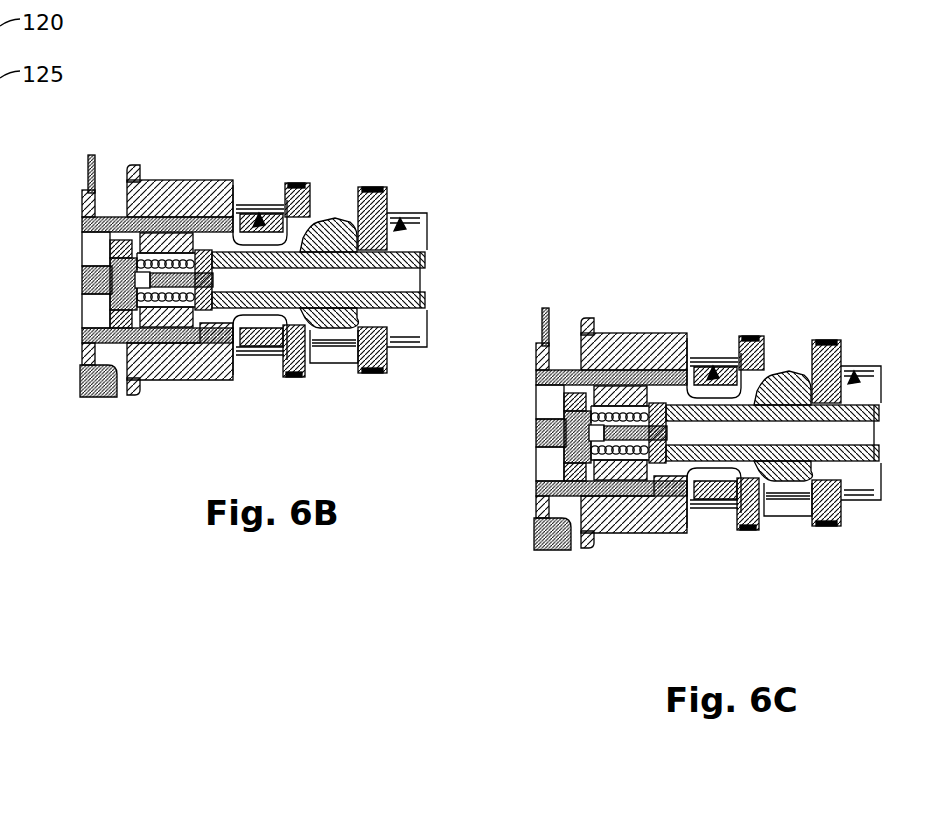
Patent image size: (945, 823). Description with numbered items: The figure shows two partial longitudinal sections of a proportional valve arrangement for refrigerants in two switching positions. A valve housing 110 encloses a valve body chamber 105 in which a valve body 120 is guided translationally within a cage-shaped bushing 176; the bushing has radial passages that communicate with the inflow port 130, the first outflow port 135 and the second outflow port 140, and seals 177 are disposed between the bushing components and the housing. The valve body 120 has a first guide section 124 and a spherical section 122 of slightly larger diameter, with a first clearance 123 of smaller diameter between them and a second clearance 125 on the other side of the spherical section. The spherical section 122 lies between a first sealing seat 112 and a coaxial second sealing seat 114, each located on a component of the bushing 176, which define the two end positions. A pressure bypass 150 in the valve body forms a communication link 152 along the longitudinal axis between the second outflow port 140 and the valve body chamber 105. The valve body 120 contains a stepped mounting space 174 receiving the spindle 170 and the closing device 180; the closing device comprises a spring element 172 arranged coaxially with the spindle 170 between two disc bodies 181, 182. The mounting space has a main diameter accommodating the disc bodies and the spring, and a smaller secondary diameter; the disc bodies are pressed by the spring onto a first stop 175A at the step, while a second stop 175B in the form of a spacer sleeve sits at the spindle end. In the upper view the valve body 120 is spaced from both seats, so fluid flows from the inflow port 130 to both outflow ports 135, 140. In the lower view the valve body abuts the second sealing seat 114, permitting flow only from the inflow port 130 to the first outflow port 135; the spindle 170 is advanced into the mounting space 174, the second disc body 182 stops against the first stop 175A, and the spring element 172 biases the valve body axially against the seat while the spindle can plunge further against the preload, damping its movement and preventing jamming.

In FIG. 6B, the valve body chamber 105 is at (103, 313).
In FIG. 6C, the valve body chamber 105 is at (556, 455).
In FIG. 6B, the valve housing 110 is at (127, 180).
In FIG. 6C, the valve housing 110 is at (576, 318).
In FIG. 6B, the first sealing seat 112 is at (276, 205).
In FIG. 6C, the first sealing seat 112 is at (757, 320).
In FIG. 6B, the second sealing seat 114 is at (353, 230).
In FIG. 6C, the second sealing seat 114 is at (836, 322).
In FIG. 6B, the valve body 120 is at (428, 262).
In FIG. 6C, the valve body 120 is at (878, 414).
In FIG. 6B, the spherical section 122 is at (331, 247).
In FIG. 6C, the spherical section 122 is at (823, 527).
In FIG. 6B, the first clearance 123 is at (248, 350).
In FIG. 6C, the first clearance 123 is at (706, 527).
In FIG. 6B, the first guide section 124 is at (222, 185).
In FIG. 6C, the first guide section 124 is at (666, 322).
In FIG. 6B, the second clearance 125 is at (397, 313).
In FIG. 6C, the second clearance 125 is at (866, 527).
In FIG. 6B, the inflow port 130 is at (330, 240).
In FIG. 6C, the inflow port 130 is at (790, 320).
In FIG. 6B, the first outflow port 135 is at (247, 213).
In FIG. 6C, the first outflow port 135 is at (708, 320).
In FIG. 6C, the second outflow port 140 is at (855, 372).
In FIG. 6B, the pressure bypass 150 is at (335, 280).
In FIG. 6C, the pressure bypass 150 is at (793, 440).
In FIG. 6B, the communication link 152 is at (336, 386).
In FIG. 6C, the communication link 152 is at (788, 542).
In FIG. 6B, the spindle 170 is at (112, 278).
In FIG. 6C, the spindle 170 is at (563, 432).
In FIG. 6B, the spring element 172 is at (157, 363).
In FIG. 6C, the spring element 172 is at (610, 527).
In FIG. 6B, the stepped mounting space 174 is at (163, 180).
In FIG. 6C, the stepped mounting space 174 is at (585, 527).
In FIG. 6B, the first stop 175A is at (197, 190).
In FIG. 6C, the first stop 175A is at (655, 527).
In FIG. 6B, the second stop 175B is at (112, 353).
In FIG. 6C, the second stop 175B is at (565, 487).
In FIG. 6B, the cage-shaped bushing 176 is at (327, 333).
In FIG. 6C, the cage-shaped bushing 176 is at (757, 527).
In FIG. 6B, the seals 177 is at (370, 373).
In FIG. 6C, the seals 177 is at (818, 322).
In FIG. 6B, the closing device 180 is at (143, 268).
In FIG. 6C, the closing device 180 is at (610, 322).
In FIG. 6B, the disc body 181 is at (113, 255).
In FIG. 6C, the disc body 181 is at (575, 415).
In FIG. 6B, the second disc body 182 is at (176, 310).
In FIG. 6C, the second disc body 182 is at (633, 322).